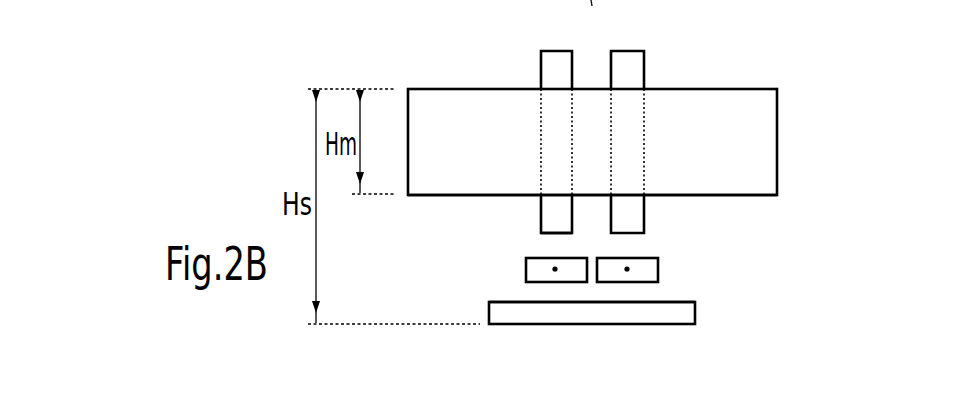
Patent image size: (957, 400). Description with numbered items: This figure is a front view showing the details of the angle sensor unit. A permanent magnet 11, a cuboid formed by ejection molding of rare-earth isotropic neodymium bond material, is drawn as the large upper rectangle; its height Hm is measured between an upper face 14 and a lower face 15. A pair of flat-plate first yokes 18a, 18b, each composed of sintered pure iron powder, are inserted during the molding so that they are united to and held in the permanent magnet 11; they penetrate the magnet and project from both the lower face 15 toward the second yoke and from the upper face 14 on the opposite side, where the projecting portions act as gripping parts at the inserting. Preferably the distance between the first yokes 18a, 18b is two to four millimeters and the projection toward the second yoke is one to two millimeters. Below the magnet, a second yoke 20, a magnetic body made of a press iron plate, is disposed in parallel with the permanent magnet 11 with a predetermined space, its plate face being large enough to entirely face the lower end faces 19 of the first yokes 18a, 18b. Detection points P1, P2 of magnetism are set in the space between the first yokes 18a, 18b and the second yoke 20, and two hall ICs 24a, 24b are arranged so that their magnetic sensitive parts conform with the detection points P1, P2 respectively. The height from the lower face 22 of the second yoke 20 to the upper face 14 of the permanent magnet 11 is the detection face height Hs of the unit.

The permanent magnet 11 is at (777, 89).
The upper face 14 is at (447, 89).
The lower face 15 is at (427, 196).
The first yoke 18a is at (541, 208).
The first yoke 18b is at (644, 208).
The lower end face 19 is at (553, 235).
The hall IC 24a is at (526, 266).
The hall IC 24b is at (660, 268).
The second yoke 20 is at (697, 313).
The lower face 22 is at (593, 325).
The detection point P1 is at (555, 272).
The detection point P2 is at (627, 272).